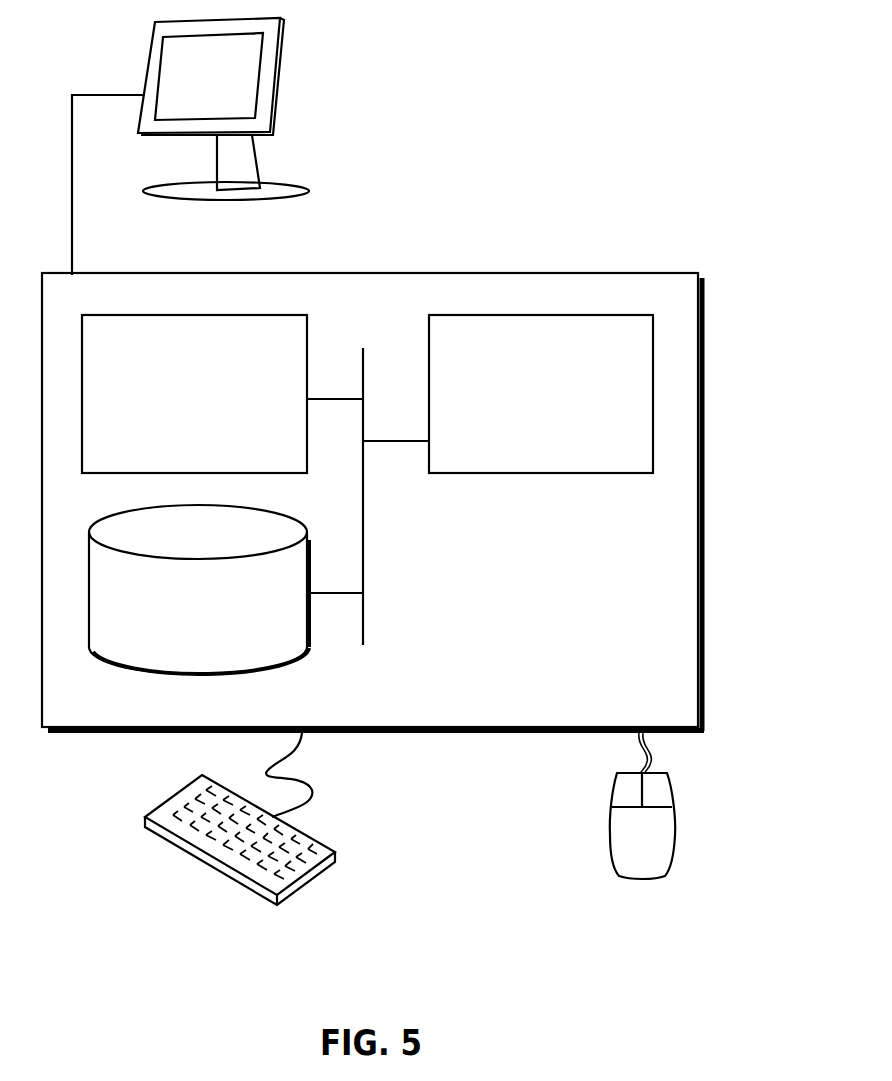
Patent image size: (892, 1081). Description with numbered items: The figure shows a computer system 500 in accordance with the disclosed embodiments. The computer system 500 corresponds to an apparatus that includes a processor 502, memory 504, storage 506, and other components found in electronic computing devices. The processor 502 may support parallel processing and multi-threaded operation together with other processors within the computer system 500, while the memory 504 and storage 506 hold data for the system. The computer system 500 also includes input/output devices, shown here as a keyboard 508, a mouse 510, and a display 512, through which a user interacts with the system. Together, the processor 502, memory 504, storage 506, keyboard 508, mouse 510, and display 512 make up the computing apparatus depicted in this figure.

The computer system 500 is at (418, 253).
The processor 502 is at (566, 408).
The memory 504 is at (215, 408).
The storage 506 is at (222, 616).
The keyboard 508 is at (163, 838).
The mouse 510 is at (663, 849).
The display 512 is at (190, 146).